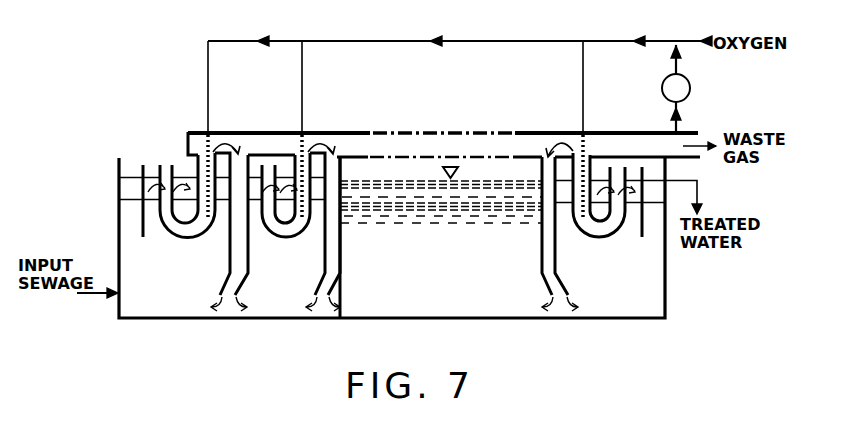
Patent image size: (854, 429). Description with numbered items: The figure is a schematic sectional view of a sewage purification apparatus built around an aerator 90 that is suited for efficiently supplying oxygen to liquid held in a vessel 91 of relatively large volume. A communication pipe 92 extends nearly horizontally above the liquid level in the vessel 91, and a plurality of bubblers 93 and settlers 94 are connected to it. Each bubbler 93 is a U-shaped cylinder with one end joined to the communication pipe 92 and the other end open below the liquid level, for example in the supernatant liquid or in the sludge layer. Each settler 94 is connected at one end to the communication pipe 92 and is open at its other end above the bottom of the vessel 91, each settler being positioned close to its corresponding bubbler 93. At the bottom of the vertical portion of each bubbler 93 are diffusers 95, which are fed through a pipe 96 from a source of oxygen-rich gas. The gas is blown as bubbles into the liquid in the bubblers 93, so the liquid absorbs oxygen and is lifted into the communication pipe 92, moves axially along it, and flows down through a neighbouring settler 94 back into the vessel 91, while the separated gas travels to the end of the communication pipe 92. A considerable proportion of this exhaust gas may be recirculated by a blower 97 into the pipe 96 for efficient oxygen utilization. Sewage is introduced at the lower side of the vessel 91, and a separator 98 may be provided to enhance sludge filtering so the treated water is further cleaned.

The aerator 90 is at (265, 131).
The vessel 91 is at (556, 320).
The communication pipe 92 is at (363, 131).
The bubbler 93 is at (173, 237).
The settler 94 is at (250, 282).
The diffuser 95 is at (205, 236).
The pipe 96 is at (403, 40).
The blower 97 is at (690, 90).
The separator 98 is at (144, 169).